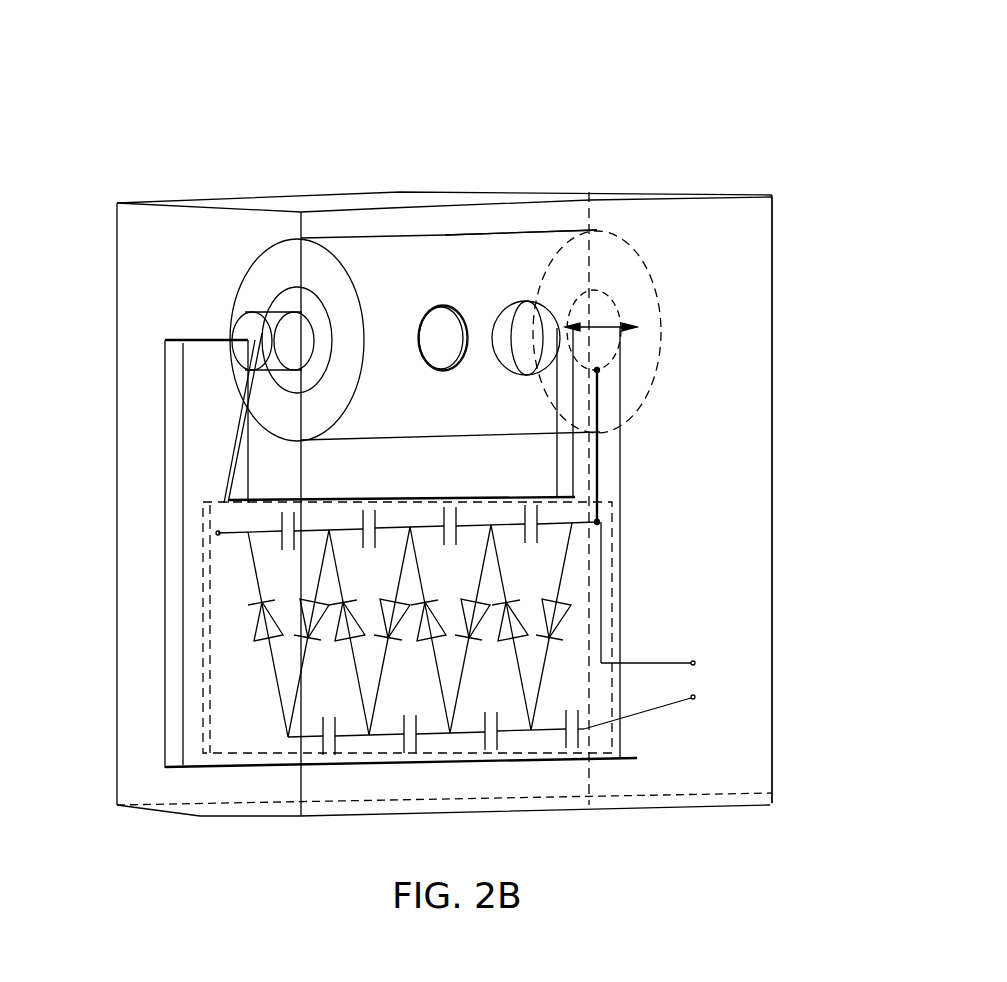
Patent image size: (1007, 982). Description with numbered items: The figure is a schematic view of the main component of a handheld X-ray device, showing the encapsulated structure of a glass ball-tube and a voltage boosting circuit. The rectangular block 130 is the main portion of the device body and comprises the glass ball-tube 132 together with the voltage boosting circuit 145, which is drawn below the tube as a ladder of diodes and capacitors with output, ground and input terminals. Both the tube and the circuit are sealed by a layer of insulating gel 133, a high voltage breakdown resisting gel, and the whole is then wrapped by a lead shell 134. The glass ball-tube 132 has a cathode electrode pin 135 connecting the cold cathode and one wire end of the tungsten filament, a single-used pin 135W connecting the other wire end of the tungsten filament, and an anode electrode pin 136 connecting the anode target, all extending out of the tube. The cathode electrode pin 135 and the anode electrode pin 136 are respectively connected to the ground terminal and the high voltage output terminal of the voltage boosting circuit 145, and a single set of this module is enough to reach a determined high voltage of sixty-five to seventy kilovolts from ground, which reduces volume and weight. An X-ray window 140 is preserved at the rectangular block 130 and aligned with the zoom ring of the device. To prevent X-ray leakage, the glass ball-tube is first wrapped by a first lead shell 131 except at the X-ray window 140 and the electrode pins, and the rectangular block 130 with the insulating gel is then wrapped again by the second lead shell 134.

The rectangular block 130 is at (592, 150).
The first lead shell 131 is at (445, 234).
The glass ball-tube 132 is at (418, 233).
The insulating gel 133 is at (668, 572).
The lead shell 134 is at (698, 248).
The cathode electrode pin 135 is at (600, 374).
The single-used pin 135W is at (596, 290).
The anode electrode pin 136 is at (242, 328).
The X-ray window 140 is at (443, 338).
The voltage boosting circuit 145 is at (462, 762).